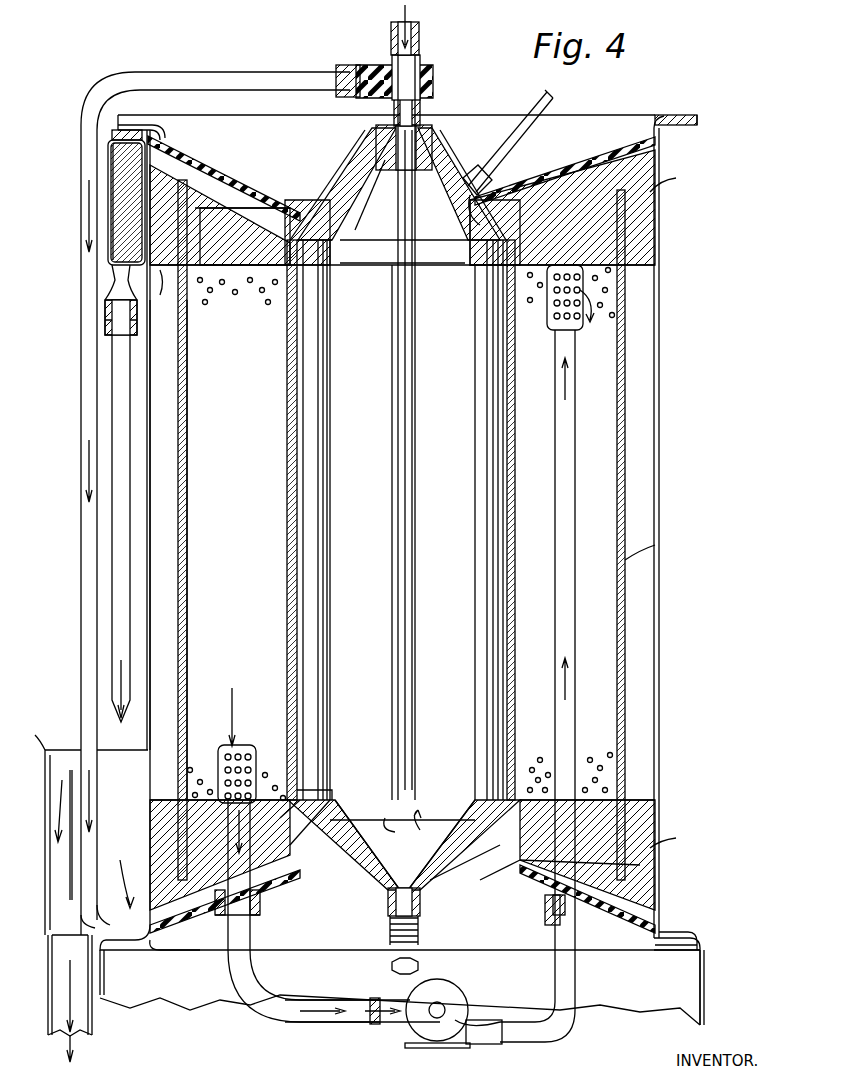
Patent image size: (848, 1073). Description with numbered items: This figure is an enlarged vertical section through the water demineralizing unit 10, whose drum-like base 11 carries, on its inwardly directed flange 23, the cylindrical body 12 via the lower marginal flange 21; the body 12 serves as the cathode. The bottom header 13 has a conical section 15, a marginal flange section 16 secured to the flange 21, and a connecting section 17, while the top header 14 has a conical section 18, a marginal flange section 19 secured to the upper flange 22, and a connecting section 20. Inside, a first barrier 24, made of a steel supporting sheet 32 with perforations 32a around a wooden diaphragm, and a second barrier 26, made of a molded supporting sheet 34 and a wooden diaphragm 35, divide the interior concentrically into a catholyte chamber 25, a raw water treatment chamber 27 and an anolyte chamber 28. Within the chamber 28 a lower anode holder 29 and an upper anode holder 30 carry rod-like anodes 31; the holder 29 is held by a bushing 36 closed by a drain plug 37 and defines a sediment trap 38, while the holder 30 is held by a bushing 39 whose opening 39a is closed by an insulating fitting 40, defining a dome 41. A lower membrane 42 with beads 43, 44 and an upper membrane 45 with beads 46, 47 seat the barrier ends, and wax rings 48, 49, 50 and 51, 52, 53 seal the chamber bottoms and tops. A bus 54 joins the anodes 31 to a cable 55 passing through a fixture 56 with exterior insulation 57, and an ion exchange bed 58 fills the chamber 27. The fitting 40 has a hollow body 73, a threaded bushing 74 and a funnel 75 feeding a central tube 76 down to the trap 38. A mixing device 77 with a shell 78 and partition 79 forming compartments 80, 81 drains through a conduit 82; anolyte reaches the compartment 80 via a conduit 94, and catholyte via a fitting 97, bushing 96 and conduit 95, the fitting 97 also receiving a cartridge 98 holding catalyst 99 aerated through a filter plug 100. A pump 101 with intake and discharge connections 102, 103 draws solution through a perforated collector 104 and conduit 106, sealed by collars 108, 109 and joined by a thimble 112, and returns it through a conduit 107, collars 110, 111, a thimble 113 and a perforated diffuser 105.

The water demineralizing unit 10 is at (700, 218).
The base 11 is at (106, 978).
The body 12 is at (659, 365).
The bottom header 13 is at (505, 875).
The top header 14 is at (255, 180).
The conical section 15 is at (445, 880).
The marginal flange section 16 is at (676, 952).
The connecting section 17 is at (280, 884).
The conical section 18 is at (345, 183).
The marginal flange section 19 is at (672, 114).
The connecting section 20 is at (605, 160).
The marginal flange 21 is at (703, 937).
The marginal flange 22 is at (685, 126).
The inwardly directed marginal flange 23 is at (675, 930).
The first barrier 24 is at (198, 440).
The catholyte chamber 25 is at (172, 447).
The second barrier 26 is at (279, 572).
The raw water treatment chamber 27 is at (238, 462).
The anolyte chamber 28 is at (362, 414).
The lower anode holder 29 is at (352, 858).
The upper anode holder 30 is at (343, 238).
The anodes 31 is at (475, 455).
The supporting sheet 32 is at (178, 585).
The perforations 32a is at (625, 560).
The supporting sheet 34 is at (306, 640).
The diaphragm 35 is at (282, 624).
The tubular insulating bushing 36 is at (420, 930).
The drain plug 37 is at (390, 962).
The sediment trap 38 is at (436, 834).
The tubular insulating bushing 39 is at (428, 132).
The opening 39a is at (370, 197).
The insulating fitting 40 is at (435, 70).
The dome 41 is at (440, 247).
The lower insulating membrane 42 is at (660, 872).
The annular bead 43 is at (203, 900).
The annular bead 44 is at (485, 885).
The upper insulating membrane 45 is at (185, 158).
The annular bead 46 is at (220, 215).
The annular bead 47 is at (245, 262).
The layer of insulating material 48 is at (160, 800).
The layer of insulating material 49 is at (610, 825).
The layer of insulating material 50 is at (340, 820).
The layer of insulating material 51 is at (673, 283).
The layer of insulating material 52 is at (232, 262).
The layer of insulating material 53 is at (348, 270).
The ring-like bus 54 is at (492, 210).
The electric cable 55 is at (478, 182).
The fixture 56 is at (480, 160).
The insulation 57 is at (549, 103).
The ion exchange bed 58 is at (530, 752).
The hollow body 73 is at (421, 100).
The threaded bushing 74 is at (340, 65).
The threaded funnel 75 is at (420, 30).
The insulating tube 76 is at (403, 545).
The mixing device 77 is at (48, 743).
The tubular shell 78 is at (50, 845).
The partition 79 is at (82, 855).
The compartment 80 is at (125, 789).
The compartment 81 is at (50, 875).
The drain conduit 82 is at (94, 1030).
The insulating conduit 94 is at (232, 72).
The insulating conduit 95 is at (112, 438).
The insulating bushing 96 is at (137, 328).
The fitting 97 is at (105, 285).
The insulating cartridge 98 is at (108, 175).
The catalytic material 99 is at (118, 208).
The filter plug 100 is at (112, 133).
The water pump 101 is at (452, 990).
The intake connection 102 is at (395, 1045).
The discharge connection 103 is at (475, 1044).
The perforated collector 104 is at (245, 745).
The perforated diffuser 105 is at (550, 325).
The conduit 106 is at (260, 975).
The conduit 107 is at (572, 980).
The collar 108 is at (258, 898).
The collar 109 is at (255, 925).
The collar 110 is at (545, 905).
The collar 111 is at (575, 918).
The insulating thimble 112 is at (365, 1024).
The insulating thimble 113 is at (488, 1020).